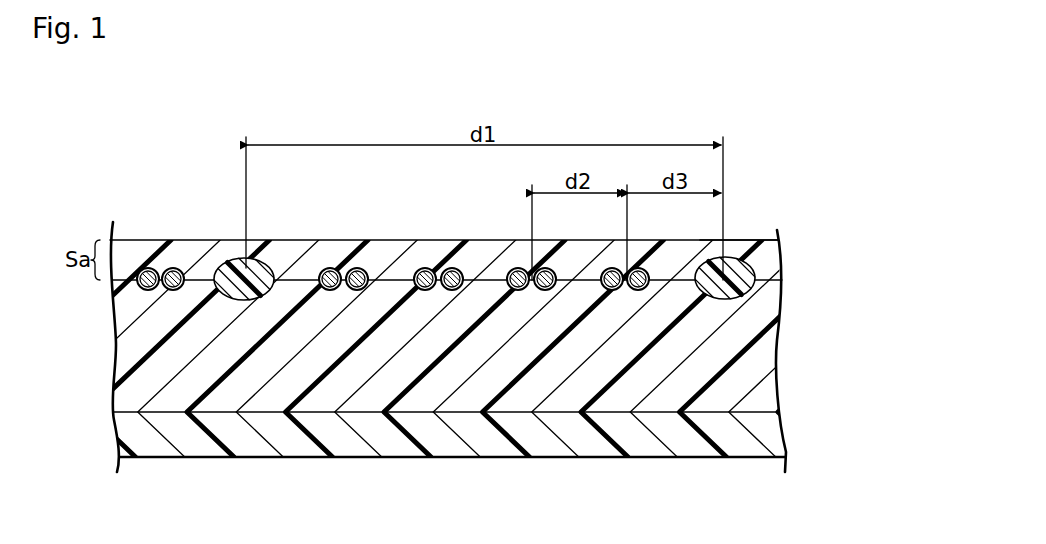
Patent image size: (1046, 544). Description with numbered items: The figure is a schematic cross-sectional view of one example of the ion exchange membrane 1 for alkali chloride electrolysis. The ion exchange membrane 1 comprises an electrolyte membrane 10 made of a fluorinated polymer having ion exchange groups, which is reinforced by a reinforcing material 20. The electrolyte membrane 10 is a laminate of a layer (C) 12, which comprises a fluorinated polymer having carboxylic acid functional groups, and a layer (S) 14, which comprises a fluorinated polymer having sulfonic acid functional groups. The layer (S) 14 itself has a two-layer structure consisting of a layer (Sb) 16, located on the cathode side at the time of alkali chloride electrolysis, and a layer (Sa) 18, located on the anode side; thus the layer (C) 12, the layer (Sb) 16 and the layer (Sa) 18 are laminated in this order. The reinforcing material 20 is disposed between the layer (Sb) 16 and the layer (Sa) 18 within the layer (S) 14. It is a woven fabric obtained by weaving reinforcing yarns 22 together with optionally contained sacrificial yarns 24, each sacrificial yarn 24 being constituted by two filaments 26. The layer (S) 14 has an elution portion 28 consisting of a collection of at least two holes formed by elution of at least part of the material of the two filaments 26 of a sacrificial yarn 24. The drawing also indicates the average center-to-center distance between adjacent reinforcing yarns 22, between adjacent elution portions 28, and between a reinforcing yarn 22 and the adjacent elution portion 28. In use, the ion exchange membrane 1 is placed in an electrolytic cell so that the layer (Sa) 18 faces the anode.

The ion exchange membrane for alkali chloride electrolysis 1 is at (223, 157).
The electrolyte membrane 10 is at (479, 347).
The layer (C) 12 is at (487, 433).
The layer (S) 14 is at (483, 326).
The layer (Sb) 16 is at (464, 396).
The layer (Sa) 18 is at (772, 272).
The reinforcing material 20 is at (761, 267).
The reinforcing yarn 22 is at (242, 260).
The sacrificial yarn 24 is at (95, 199).
The filament 26 is at (145, 268).
The elution portion 28 is at (188, 259).